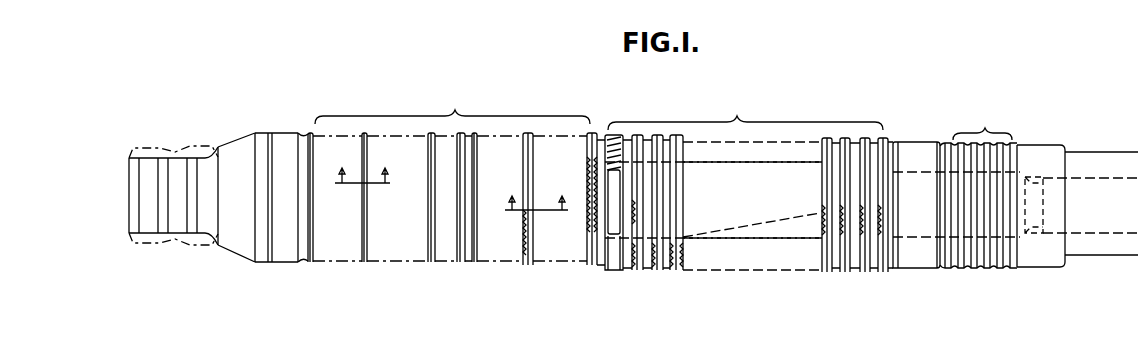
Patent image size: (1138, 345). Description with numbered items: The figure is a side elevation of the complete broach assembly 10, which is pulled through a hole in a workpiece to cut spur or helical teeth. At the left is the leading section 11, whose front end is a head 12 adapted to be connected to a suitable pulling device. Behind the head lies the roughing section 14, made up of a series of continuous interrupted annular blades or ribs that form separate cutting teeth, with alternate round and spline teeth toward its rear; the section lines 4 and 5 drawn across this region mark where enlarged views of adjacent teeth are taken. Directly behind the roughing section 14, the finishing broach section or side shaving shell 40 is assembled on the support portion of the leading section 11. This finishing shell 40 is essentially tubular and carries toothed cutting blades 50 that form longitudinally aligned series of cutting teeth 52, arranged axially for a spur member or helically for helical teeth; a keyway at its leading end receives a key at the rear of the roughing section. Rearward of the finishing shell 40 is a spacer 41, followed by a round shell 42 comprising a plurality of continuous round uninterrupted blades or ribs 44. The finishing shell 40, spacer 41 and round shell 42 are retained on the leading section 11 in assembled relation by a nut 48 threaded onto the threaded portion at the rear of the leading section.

The broach assembly 10 is at (633, 196).
The leading section 11 is at (237, 138).
The head 12 is at (152, 235).
The roughing section 14 is at (445, 112).
The line 4— 4 is at (362, 165).
The line 5— 5 is at (536, 193).
The finishing section or side shaving shell 40 is at (742, 202).
The spacer 41 is at (921, 146).
The round shell 42 is at (978, 204).
The round uninterrupted blades or ribs 44 is at (966, 269).
The nut 48 is at (1111, 158).
The toothed cutting blades 50 is at (653, 271).
The cutting teeth 52 is at (676, 271).